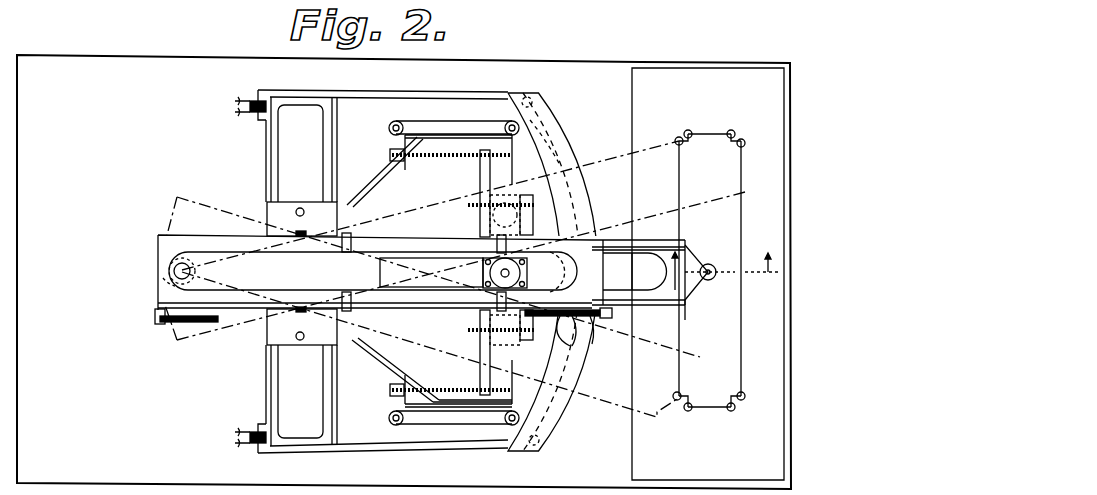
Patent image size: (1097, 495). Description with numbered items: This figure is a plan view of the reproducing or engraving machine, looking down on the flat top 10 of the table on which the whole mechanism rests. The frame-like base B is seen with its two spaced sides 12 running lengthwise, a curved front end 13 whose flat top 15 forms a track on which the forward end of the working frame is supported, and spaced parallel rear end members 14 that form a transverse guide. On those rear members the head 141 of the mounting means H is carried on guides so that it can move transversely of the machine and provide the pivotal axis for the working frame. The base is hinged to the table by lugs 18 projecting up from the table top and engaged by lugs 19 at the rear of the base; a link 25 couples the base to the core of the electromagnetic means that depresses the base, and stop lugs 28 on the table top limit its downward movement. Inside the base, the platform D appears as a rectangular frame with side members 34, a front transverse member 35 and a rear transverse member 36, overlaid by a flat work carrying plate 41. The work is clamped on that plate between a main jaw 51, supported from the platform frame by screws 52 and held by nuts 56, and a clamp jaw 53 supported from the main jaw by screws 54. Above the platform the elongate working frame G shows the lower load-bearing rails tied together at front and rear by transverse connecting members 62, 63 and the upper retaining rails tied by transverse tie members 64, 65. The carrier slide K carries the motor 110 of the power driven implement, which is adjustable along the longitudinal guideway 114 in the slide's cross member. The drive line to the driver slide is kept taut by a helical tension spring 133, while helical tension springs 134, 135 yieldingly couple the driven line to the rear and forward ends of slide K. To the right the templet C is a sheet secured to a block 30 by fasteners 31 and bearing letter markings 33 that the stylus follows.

The flat top 10 is at (404, 272).
The spaced sides 12 is at (457, 88).
The front end 13 is at (550, 118).
The rear end members 14 is at (266, 160).
The flat top 15 is at (566, 134).
The lugs 18 is at (246, 96).
The lugs 19 is at (264, 94).
The link 25 is at (710, 280).
The stop lugs 28 is at (540, 101).
The block 30 is at (722, 45).
The fasteners 31 is at (684, 134).
The markings 33 is at (720, 258).
The side members 34 is at (482, 113).
The front transverse member 35 is at (560, 142).
The rear transverse member 36 is at (384, 170).
The work carrying plate 41 is at (377, 376).
The main jaw 51 is at (482, 180).
The screws 52 is at (451, 271).
The clamp jaw 53 is at (524, 226).
The screws 54 is at (510, 200).
The nuts 56 is at (478, 156).
The transverse connecting member 62 is at (574, 271).
The transverse connecting member 63 is at (162, 280).
The transverse tie member 64 is at (610, 272).
The transverse tie member 65 is at (172, 264).
The motor 110 is at (488, 273).
The longitudinal guideway 114 is at (380, 271).
The helical tension spring 133 is at (598, 332).
The helical tension spring 134 is at (170, 321).
The helical tension spring 135 is at (594, 348).
The head 141 is at (314, 202).